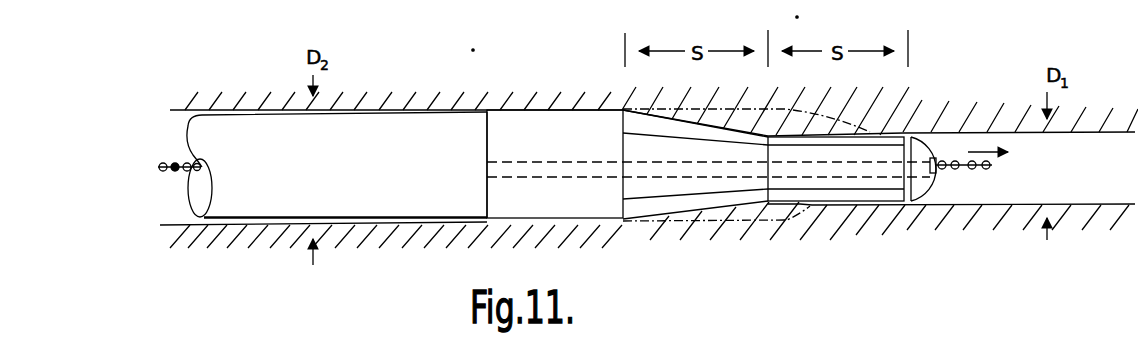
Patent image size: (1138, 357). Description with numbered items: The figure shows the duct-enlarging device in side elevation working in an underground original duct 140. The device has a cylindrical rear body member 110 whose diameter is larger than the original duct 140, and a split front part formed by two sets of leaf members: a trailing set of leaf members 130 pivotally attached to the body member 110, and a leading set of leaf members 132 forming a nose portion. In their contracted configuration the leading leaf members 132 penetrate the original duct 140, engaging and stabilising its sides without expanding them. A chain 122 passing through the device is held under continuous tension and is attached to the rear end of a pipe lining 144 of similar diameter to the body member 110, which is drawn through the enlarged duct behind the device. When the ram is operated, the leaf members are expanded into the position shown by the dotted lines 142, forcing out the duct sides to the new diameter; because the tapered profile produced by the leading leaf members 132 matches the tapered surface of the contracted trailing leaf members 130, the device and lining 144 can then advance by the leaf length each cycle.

The rear body member 110 is at (553, 205).
The chain 122 is at (166, 172).
The trailing leaf members 130 is at (681, 153).
The leading leaf members 132 is at (860, 162).
The original duct 140 is at (980, 131).
The rear pivot joints (dotted lines showing expanded leaf members) 142 is at (802, 109).
The pipe lining 144 is at (385, 127).